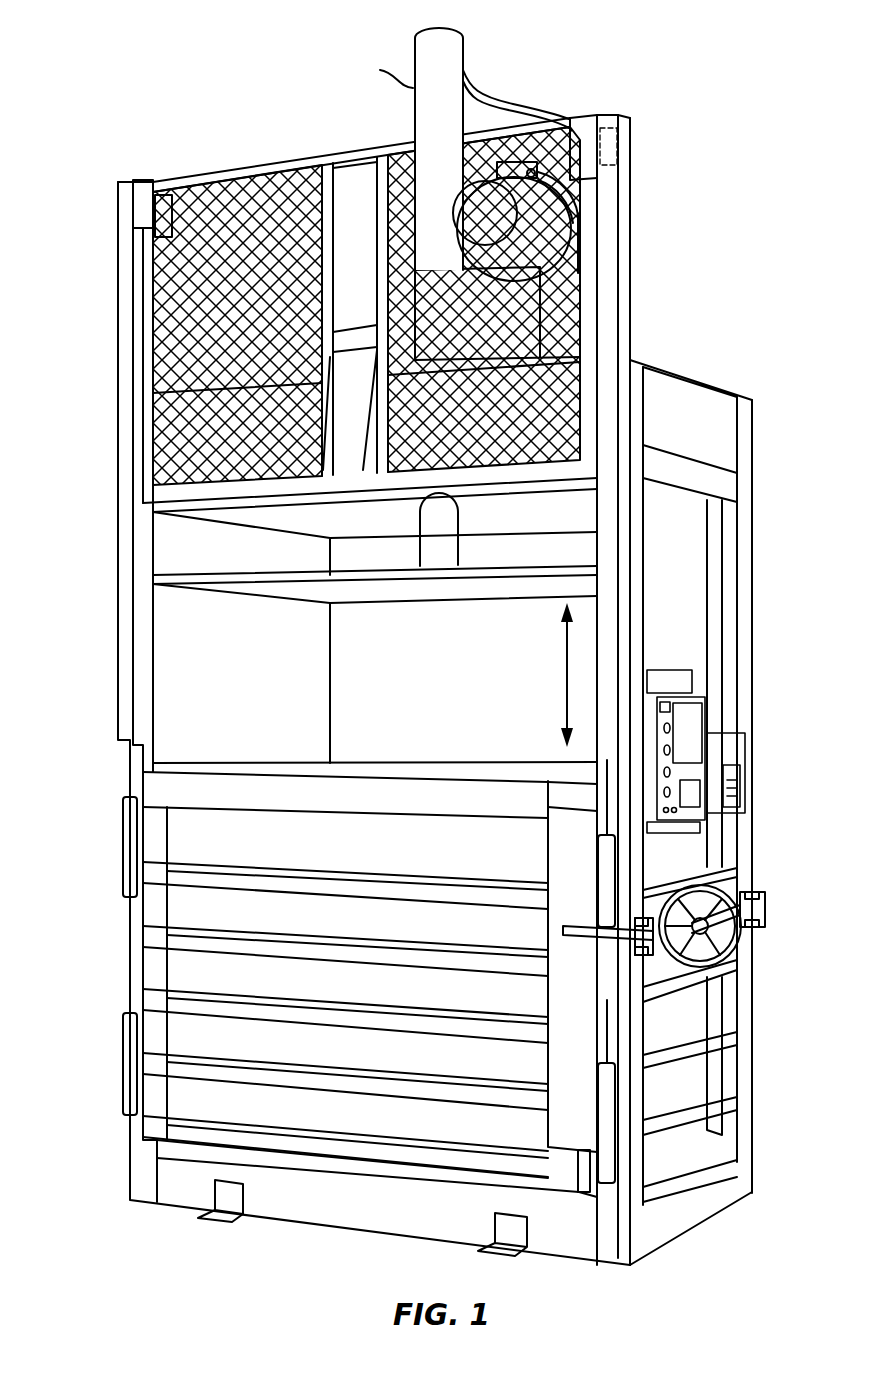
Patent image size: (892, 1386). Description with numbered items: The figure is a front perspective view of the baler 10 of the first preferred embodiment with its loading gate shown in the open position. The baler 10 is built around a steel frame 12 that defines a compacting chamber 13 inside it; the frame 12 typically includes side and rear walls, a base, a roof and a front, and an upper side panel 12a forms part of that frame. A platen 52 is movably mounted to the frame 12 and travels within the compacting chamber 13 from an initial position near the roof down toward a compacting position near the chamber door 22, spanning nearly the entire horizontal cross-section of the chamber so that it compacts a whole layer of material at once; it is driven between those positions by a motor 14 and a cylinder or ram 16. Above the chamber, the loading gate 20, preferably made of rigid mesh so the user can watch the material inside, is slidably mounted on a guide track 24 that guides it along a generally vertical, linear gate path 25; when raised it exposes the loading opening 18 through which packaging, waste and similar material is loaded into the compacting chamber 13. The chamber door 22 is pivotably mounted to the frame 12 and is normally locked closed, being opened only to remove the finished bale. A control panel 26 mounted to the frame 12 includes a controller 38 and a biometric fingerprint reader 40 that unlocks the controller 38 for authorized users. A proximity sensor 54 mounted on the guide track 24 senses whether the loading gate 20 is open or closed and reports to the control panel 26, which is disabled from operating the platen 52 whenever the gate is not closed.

The baler 10 is at (224, 74).
The frame 12 is at (678, 575).
The upper side panel 12a is at (703, 405).
The compacting chamber 13 is at (172, 657).
The motor 14 is at (497, 213).
The cylinder or ram 16 is at (413, 86).
The loading opening 18 is at (172, 693).
The loading gate 20 is at (243, 168).
The chamber door 22 is at (190, 975).
The guide track 24 is at (627, 250).
The gate path 25 is at (567, 653).
The control panel 26 is at (726, 694).
The controller 38 is at (698, 720).
The biometric reader 40 is at (743, 775).
The platen 52 is at (203, 574).
The proximity sensor 54 is at (617, 143).